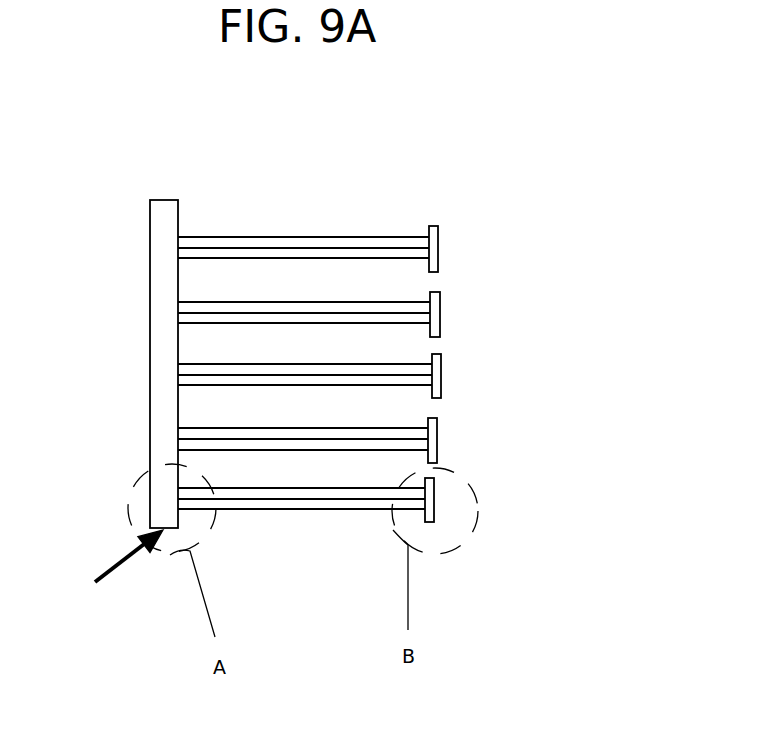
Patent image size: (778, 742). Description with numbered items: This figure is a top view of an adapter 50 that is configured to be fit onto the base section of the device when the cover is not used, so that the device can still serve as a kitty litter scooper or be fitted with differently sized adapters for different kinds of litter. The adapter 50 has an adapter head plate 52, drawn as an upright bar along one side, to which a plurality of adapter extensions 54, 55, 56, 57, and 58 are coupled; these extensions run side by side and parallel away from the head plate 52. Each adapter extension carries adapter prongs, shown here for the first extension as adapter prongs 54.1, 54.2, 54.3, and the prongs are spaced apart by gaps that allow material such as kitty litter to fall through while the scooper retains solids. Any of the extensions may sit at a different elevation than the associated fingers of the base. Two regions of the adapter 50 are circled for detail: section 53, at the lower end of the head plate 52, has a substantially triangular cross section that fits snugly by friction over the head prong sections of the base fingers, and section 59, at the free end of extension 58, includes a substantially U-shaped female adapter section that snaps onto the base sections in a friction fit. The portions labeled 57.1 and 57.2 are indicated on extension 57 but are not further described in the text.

The adapter 50 is at (166, 161).
The adapter head plate 52 is at (163, 203).
The section 53 is at (118, 562).
The adapter extension 54 is at (478, 217).
The adapter prong 54.1 is at (228, 258).
The adapter prong 54.2 is at (273, 247).
The adapter prong 54.3 is at (343, 237).
The adapter extension 55 is at (472, 305).
The adapter extension 56 is at (490, 357).
The adapter extension 57 is at (458, 432).
The first section of fourth deformable element 57.1 is at (243, 430).
The second section of fourth deformable element 57.2 is at (357, 430).
The adapter extension 58 is at (503, 485).
The section 59 is at (428, 522).